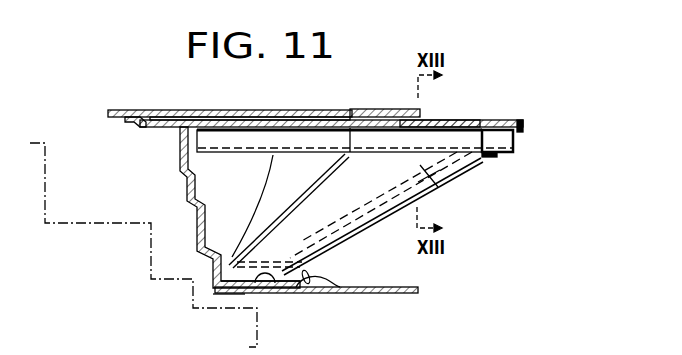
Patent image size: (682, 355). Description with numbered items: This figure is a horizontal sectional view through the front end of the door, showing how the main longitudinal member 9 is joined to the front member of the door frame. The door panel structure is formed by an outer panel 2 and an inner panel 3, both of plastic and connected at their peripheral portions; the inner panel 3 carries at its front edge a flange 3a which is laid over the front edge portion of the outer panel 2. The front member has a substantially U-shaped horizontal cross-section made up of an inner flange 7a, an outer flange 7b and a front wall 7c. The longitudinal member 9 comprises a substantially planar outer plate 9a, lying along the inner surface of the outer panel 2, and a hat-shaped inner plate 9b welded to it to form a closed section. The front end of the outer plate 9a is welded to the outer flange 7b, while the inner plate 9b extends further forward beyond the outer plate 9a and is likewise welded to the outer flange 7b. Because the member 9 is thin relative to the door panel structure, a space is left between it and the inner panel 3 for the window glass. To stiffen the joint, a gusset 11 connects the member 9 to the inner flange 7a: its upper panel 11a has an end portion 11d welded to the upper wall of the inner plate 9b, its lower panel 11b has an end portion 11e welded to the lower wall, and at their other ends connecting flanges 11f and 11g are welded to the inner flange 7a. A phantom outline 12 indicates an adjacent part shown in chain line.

The outer panel 2 is at (130, 111).
The inner panel 3 is at (397, 294).
The flange 3a is at (150, 122).
The inner flange 7a is at (340, 288).
The outer flange 7b is at (268, 128).
The front wall 7c is at (188, 218).
The main longitudinal member 9 is at (509, 120).
The outer plate 9a is at (455, 120).
The inner plate 9b is at (514, 143).
The gusset 11 is at (466, 170).
The upper panel 11a is at (428, 184).
The lower panel 11b is at (260, 193).
The end portion 11d is at (398, 110).
The end portion 11e is at (240, 112).
The connecting flange 11f is at (227, 295).
The connecting flange 11g is at (285, 284).
The outline of adjacent member (phantom) 12 is at (78, 222).